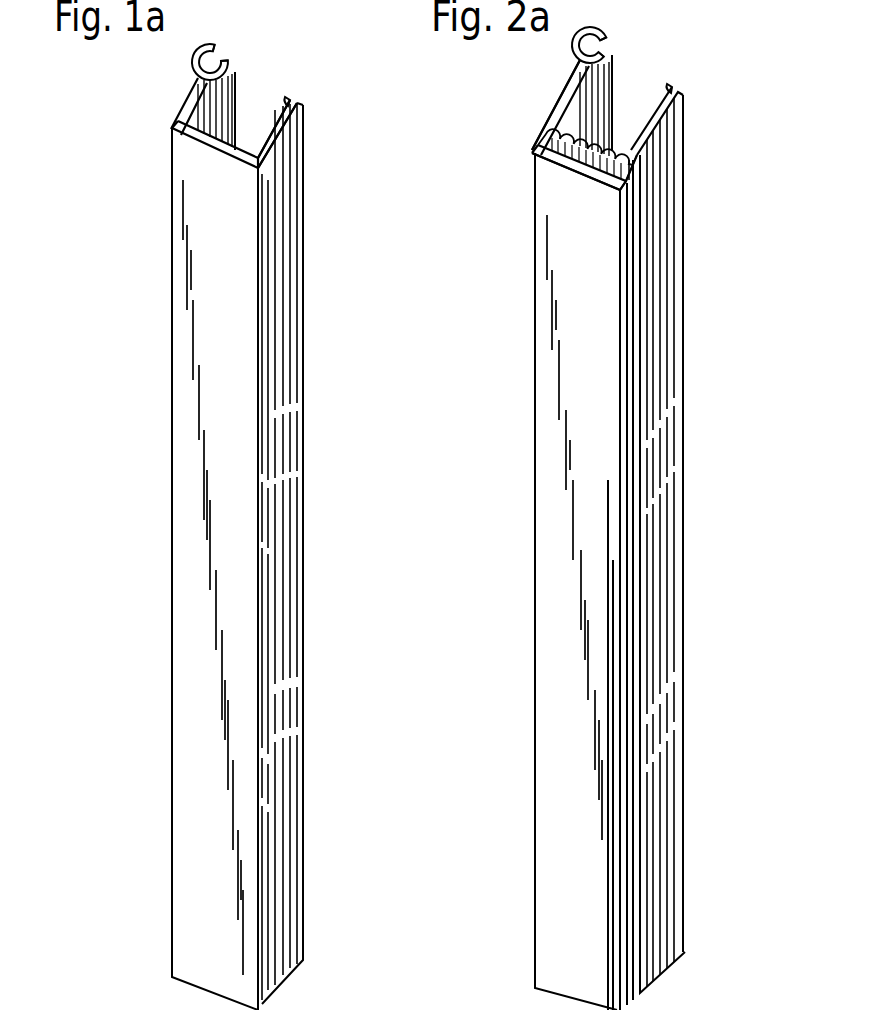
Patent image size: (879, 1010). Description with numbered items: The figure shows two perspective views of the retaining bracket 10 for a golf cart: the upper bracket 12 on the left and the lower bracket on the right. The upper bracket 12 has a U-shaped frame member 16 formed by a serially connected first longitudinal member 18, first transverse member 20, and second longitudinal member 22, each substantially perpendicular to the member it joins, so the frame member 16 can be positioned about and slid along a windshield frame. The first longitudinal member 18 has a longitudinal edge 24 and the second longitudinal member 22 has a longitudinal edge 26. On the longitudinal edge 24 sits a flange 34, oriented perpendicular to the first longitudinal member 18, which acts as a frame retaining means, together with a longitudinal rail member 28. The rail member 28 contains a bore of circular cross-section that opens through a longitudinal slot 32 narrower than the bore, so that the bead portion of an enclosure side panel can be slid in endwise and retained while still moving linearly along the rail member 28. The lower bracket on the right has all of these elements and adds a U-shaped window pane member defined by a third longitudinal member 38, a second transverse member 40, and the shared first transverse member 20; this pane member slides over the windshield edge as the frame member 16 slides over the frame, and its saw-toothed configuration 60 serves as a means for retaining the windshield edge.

In FIG. 1A, the retaining bracket 10 is at (128, 177).
In FIG. 2A, the retaining bracket 10 is at (681, 552).
In FIG. 1A, the upper bracket 12 is at (128, 259).
In FIG. 1A, the U-shaped frame member 16 is at (256, 110).
In FIG. 1A, the first longitudinal member 18 is at (178, 125).
In FIG. 2A, the first longitudinal member 18 is at (562, 100).
In FIG. 1A, the first transverse member 20 is at (183, 335).
In FIG. 2A, the first transverse member 20 is at (619, 115).
In FIG. 1A, the second longitudinal member 22 is at (283, 313).
In FIG. 2A, the second longitudinal member 22 is at (660, 320).
In FIG. 2A, the longitudinal edge 24 is at (576, 68).
In FIG. 2A, the longitudinal edge 26 is at (686, 95).
In FIG. 1A, the longitudinal rail member 28 is at (192, 56).
In FIG. 2A, the longitudinal rail member 28 is at (571, 40).
In FIG. 1A, the longitudinal slot 32 is at (218, 44).
In FIG. 2A, the longitudinal slot 32 is at (603, 34).
In FIG. 1A, the flange 34 is at (300, 101).
In FIG. 2A, the flange 34 is at (683, 88).
In FIG. 2A, the third longitudinal member 38 is at (540, 141).
In FIG. 2A, the second transverse member 40 is at (576, 172).
In FIG. 2A, the saw-toothed configuration 60 is at (632, 171).